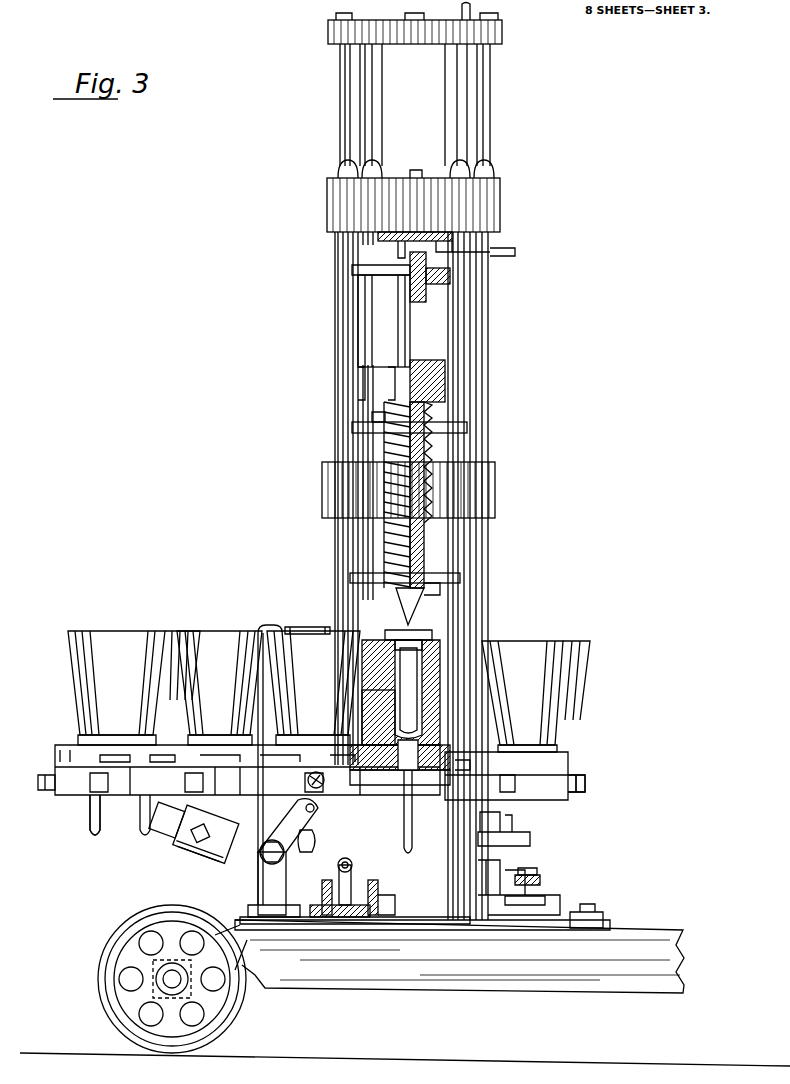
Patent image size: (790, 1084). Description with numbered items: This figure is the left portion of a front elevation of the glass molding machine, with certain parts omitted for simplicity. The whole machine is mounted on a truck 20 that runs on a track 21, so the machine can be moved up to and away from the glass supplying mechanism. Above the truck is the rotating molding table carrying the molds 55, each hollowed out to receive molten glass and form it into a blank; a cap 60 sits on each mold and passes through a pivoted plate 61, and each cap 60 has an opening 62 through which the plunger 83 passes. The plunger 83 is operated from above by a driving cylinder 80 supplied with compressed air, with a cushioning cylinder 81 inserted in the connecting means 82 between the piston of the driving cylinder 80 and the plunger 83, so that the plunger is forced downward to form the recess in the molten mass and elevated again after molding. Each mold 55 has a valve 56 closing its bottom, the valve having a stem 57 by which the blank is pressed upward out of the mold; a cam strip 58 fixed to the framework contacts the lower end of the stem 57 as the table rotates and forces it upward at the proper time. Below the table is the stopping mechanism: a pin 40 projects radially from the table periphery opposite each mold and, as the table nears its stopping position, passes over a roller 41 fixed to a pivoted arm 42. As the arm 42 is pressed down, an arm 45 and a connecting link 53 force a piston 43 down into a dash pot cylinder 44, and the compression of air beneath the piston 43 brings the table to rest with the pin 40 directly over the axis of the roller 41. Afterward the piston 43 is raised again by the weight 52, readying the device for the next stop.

The truck 20 is at (634, 980).
The track 21 is at (448, 1067).
The pin 40 is at (308, 782).
The roller 41 is at (318, 822).
The pivoted arm 42 is at (312, 834).
The piston 43 is at (360, 880).
The dash pot cylinder 44 is at (380, 897).
The arm 45 is at (358, 848).
The weight 52 is at (210, 845).
The connecting link 53 is at (345, 905).
The mold 55 is at (445, 645).
The valve 56 is at (383, 735).
The stem 57 is at (96, 830).
The cam strip 58 is at (532, 840).
The cap 60 is at (305, 628).
The plate 61 is at (280, 631).
The opening 62 is at (408, 634).
The driving cylinder 80 is at (478, 116).
The cushioning cylinder 81 is at (372, 322).
The connecting means 82 is at (428, 253).
The plunger 83 is at (420, 567).